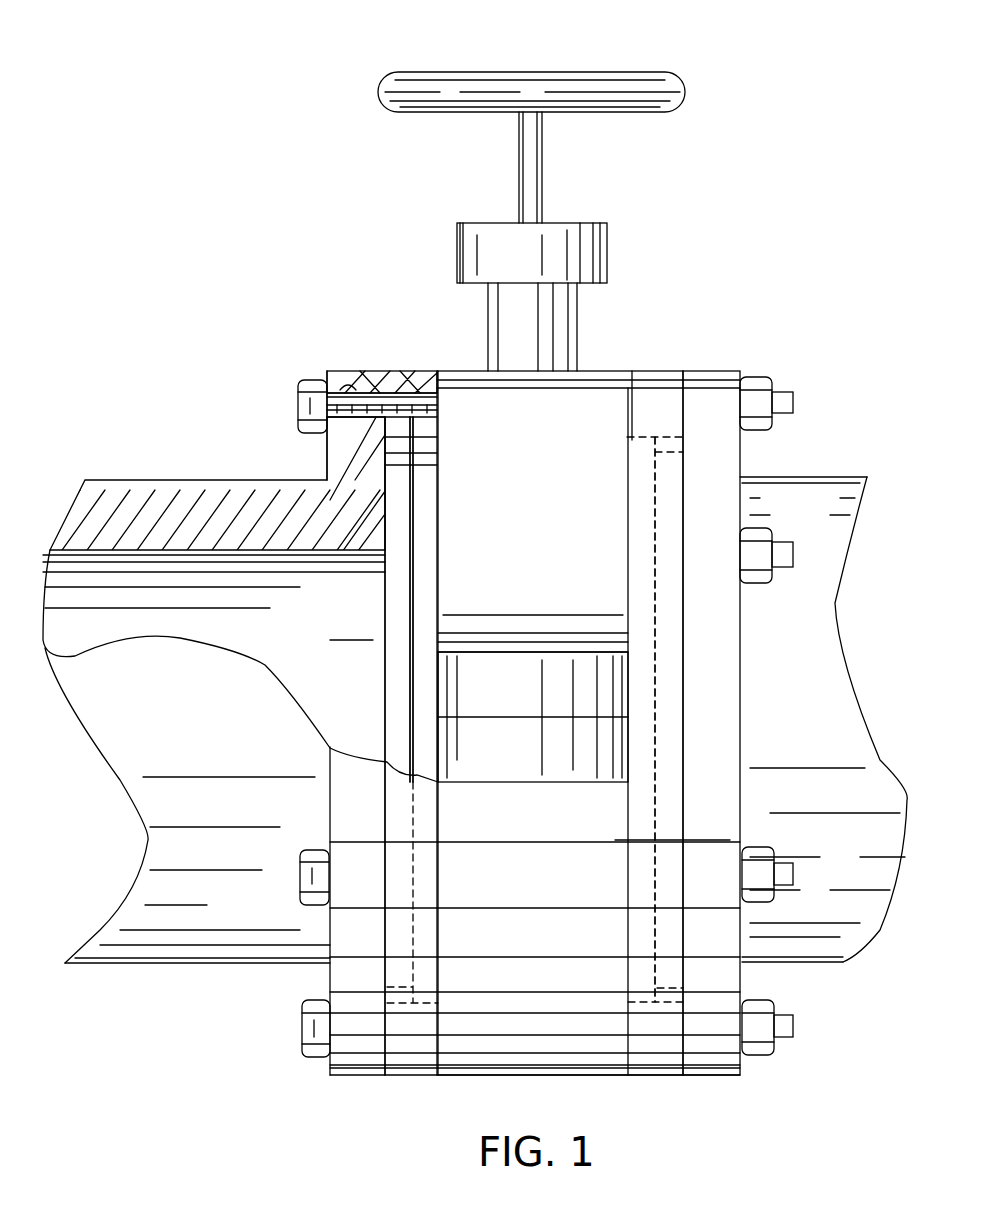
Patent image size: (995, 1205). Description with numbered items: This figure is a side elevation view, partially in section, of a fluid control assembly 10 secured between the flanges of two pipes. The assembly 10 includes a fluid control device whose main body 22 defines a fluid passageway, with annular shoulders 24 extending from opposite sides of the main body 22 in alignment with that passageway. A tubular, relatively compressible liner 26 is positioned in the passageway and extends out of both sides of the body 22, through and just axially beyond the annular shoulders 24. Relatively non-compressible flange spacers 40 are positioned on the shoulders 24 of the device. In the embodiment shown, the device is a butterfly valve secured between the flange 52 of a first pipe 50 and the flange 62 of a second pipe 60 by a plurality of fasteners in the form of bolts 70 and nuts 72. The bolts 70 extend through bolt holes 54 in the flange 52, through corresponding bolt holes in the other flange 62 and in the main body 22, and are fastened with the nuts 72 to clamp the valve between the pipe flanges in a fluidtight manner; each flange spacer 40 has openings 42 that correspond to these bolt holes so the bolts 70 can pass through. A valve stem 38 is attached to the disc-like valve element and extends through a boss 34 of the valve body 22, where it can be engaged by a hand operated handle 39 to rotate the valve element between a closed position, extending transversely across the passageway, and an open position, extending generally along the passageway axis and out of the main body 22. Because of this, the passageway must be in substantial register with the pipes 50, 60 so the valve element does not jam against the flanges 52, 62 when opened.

The fluid control assembly 10 is at (675, 347).
The main body 22 is at (475, 388).
The annular shoulders 24 is at (420, 557).
The liner 26 is at (393, 595).
The boss 34 is at (578, 346).
The valve stem 38 is at (535, 177).
The handle 39 is at (625, 82).
The flange spacers 40 is at (417, 1062).
The openings 42 is at (405, 371).
The pipe 50 is at (120, 480).
The flange 52 is at (365, 371).
The bolt holes 54 is at (345, 371).
The pipe 60 is at (845, 477).
The flange 62 is at (722, 374).
The bolts 70 is at (772, 380).
The nuts 72 is at (305, 400).